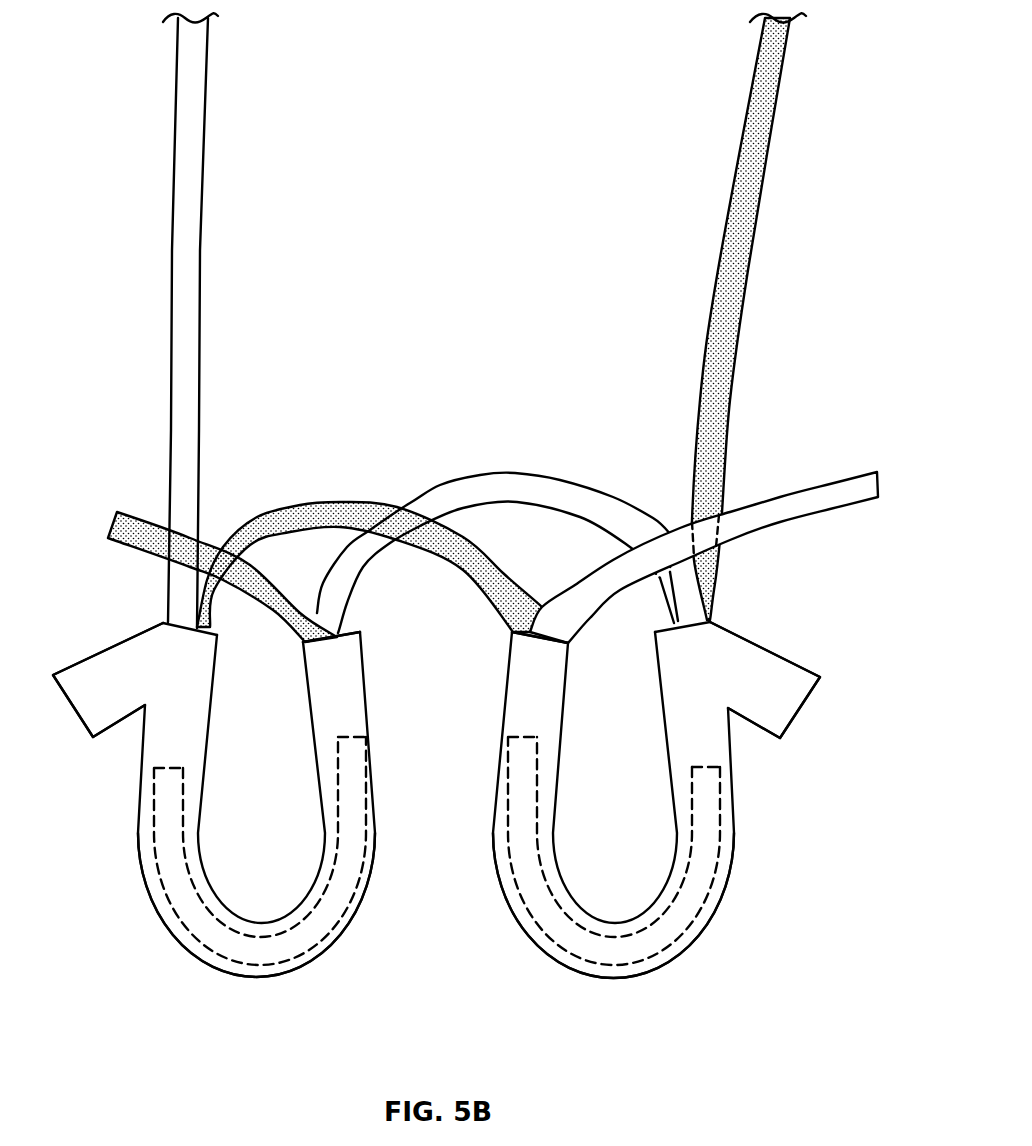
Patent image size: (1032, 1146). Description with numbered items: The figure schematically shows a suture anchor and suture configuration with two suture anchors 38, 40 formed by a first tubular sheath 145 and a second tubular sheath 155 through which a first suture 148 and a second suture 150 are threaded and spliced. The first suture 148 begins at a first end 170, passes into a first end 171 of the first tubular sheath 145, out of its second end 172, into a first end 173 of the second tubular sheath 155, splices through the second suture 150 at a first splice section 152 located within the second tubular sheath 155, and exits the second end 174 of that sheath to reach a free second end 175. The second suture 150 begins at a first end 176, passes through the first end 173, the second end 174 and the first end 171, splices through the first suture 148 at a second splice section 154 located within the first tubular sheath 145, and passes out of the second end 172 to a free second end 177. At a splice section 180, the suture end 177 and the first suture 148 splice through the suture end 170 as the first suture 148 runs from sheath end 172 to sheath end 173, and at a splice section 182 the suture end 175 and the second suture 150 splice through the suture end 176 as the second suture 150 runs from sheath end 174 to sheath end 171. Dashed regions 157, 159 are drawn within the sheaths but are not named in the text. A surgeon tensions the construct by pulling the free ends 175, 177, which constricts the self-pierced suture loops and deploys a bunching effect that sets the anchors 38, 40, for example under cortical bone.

The suture anchor 38 is at (138, 817).
The suture anchor 40 is at (735, 812).
The first tubular sheath 145 is at (157, 910).
The first suture 148 is at (755, 225).
The second suture 150 is at (172, 168).
The first splice section 152 is at (675, 930).
The second splice section 154 is at (208, 931).
The second tubular sheath 155 is at (734, 865).
The first patch inner edge 157 is at (325, 942).
The second patch outer edge 159 is at (553, 943).
The first end of first suture 170 is at (115, 505).
The first end of first tubular sheath 171 is at (365, 621).
The second end of first tubular sheath 172 is at (160, 611).
The first end of second tubular sheath 173 is at (502, 634).
The second end of second tubular sheath 174 is at (755, 624).
The second end of first suture 175 is at (795, 45).
The first end of second suture 176 is at (893, 488).
The second end of second suture 177 is at (212, 70).
The splice section 180 is at (224, 513).
The splice section 182 is at (682, 517).